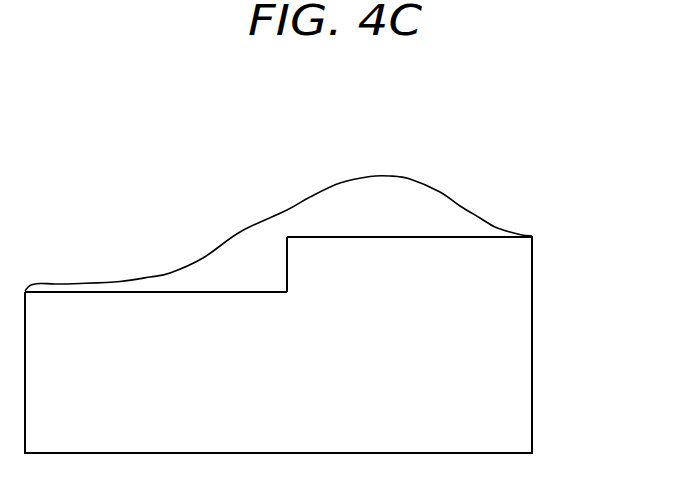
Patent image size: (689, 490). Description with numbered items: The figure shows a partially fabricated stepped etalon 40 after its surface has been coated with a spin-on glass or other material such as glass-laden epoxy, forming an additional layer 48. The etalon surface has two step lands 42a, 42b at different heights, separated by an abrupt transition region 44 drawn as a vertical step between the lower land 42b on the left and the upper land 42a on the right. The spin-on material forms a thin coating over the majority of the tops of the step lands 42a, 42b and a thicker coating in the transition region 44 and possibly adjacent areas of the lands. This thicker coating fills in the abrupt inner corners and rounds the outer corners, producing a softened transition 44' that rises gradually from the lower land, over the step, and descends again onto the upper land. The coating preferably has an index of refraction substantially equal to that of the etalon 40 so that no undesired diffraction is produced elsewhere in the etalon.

The stepped etalon 40 is at (500, 375).
The step land 42a is at (410, 245).
The step land 42b is at (167, 298).
The transition region 44 is at (292, 303).
The softened transition 44' is at (167, 230).
The additional layer 48 is at (403, 203).